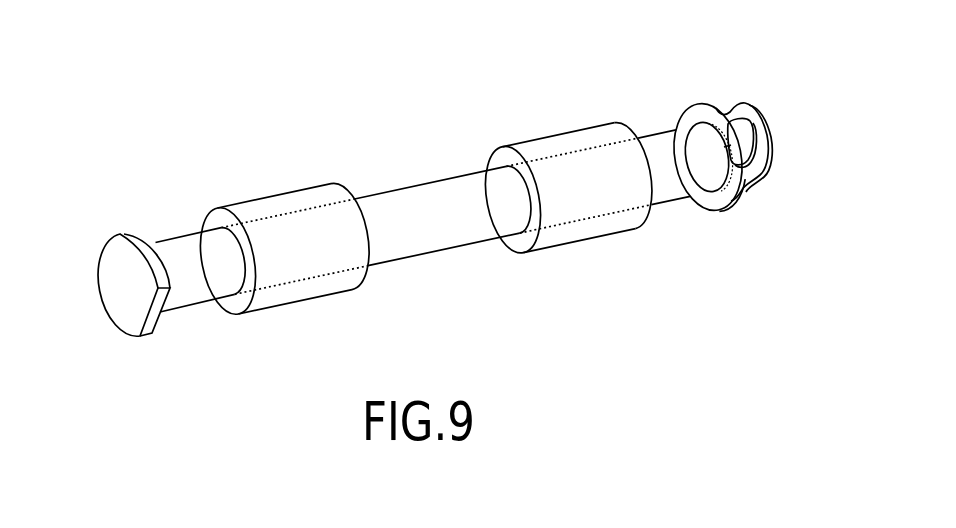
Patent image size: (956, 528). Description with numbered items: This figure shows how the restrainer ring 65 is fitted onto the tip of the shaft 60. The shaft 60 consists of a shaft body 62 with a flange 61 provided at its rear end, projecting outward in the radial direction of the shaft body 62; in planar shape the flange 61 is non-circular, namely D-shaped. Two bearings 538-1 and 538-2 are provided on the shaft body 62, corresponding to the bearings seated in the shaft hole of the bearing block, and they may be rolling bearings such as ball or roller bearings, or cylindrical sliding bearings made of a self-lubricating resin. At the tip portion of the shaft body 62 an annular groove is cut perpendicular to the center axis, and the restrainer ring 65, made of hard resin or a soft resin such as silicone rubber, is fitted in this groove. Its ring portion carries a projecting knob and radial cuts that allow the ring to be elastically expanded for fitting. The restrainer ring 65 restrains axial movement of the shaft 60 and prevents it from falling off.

The shaft 60 is at (403, 159).
The flange 61 is at (116, 241).
The shaft body 62 is at (383, 192).
The bearing 538-1 is at (262, 199).
The bearing 538-2 is at (557, 134).
The restrainer ring 65 is at (696, 70).